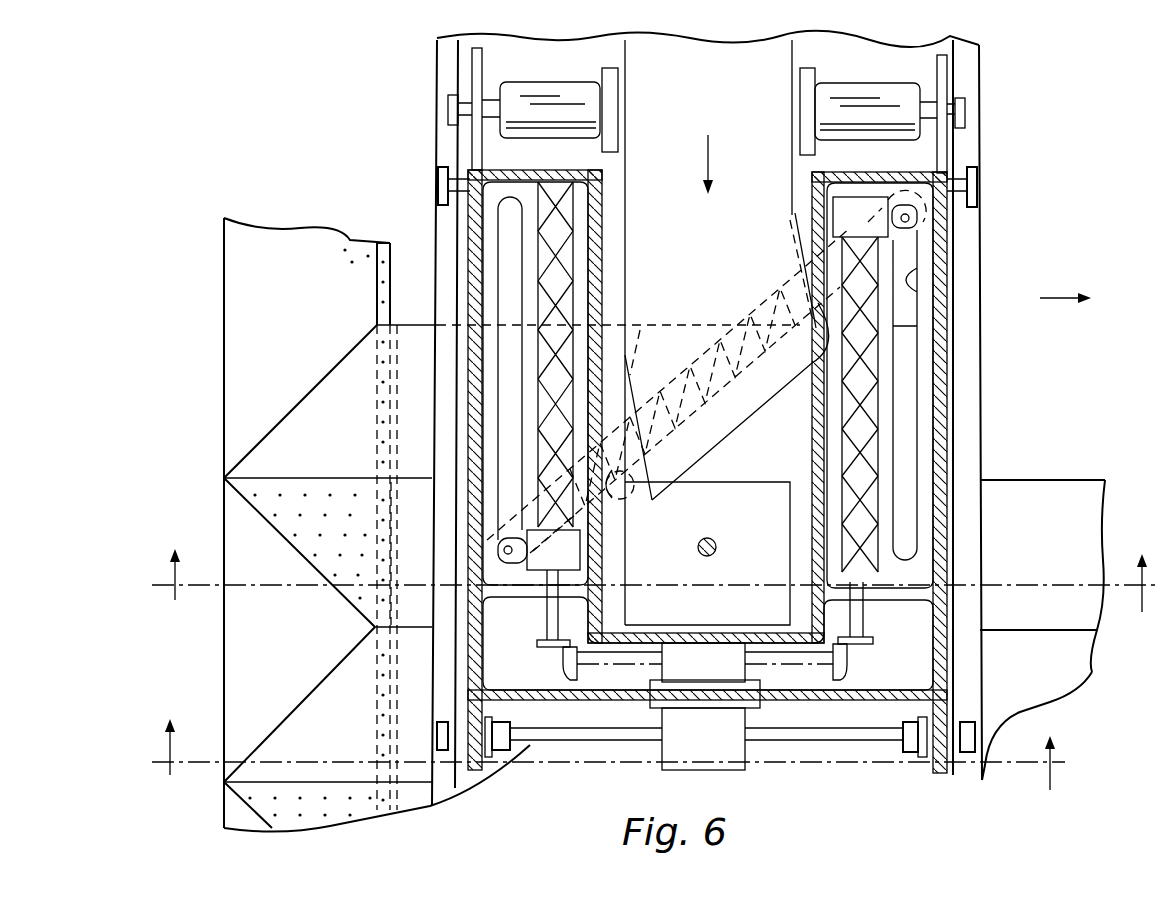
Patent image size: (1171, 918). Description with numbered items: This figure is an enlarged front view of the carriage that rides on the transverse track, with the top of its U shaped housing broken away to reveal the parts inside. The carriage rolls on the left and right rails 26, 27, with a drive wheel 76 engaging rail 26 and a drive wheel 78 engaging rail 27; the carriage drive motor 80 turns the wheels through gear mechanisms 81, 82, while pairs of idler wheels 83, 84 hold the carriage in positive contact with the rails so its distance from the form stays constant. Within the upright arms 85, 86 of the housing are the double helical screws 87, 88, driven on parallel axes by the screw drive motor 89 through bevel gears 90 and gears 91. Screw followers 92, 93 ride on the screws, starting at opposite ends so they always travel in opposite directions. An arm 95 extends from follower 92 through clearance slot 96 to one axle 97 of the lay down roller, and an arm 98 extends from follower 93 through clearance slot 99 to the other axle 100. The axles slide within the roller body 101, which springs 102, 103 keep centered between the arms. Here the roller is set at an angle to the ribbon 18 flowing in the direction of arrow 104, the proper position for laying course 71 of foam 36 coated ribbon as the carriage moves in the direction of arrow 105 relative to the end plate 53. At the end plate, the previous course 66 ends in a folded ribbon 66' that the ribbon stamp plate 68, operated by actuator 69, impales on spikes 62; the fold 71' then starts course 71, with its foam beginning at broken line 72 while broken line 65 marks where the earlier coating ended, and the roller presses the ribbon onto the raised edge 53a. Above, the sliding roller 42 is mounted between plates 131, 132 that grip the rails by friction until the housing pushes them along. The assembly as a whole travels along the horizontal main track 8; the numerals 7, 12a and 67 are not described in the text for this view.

The section line 7- 7 is at (656, 581).
The main track 8 is at (608, 755).
The reference plane 12a is at (384, 315).
The ribbon 18 is at (634, 496).
The left rail 26 is at (437, 112).
The right rail 27 is at (982, 354).
The foam 36 is at (692, 83).
The sliding roller 42 is at (548, 82).
The end plate 53 is at (222, 401).
The raised edge 53a is at (379, 260).
The spikes 62 is at (322, 257).
The broken line 65 is at (404, 530).
The course 66 is at (1042, 548).
The folded ribbon 66' is at (328, 653).
The wall 67 is at (1078, 672).
The ribbon stamp plate 68 is at (755, 496).
The actuator 69 is at (717, 548).
The course 71 is at (618, 291).
The fold 71' is at (300, 401).
The broken line 72 is at (398, 381).
The drive wheel 76 is at (442, 752).
The drive wheel 78 is at (965, 754).
The carriage drive motor 80 is at (690, 744).
The gear mechanism 81 is at (503, 752).
The gear mechanism 82 is at (910, 756).
The idler wheels 83 is at (430, 187).
The idler wheels 84 is at (978, 187).
The upright arm 85 is at (603, 220).
The upright arm 86 is at (812, 197).
The double helical screw 87 is at (575, 258).
The double helical screw 88 is at (837, 395).
The screw drive motor 89 is at (690, 672).
The bevel gears 90 is at (547, 664).
The gears 91 is at (871, 661).
The screw follower 92 is at (582, 555).
The screw follower 93 is at (827, 221).
The arm 95 is at (509, 560).
The clearance slot 96 is at (505, 258).
The axle 97 is at (553, 550).
The arm 98 is at (913, 218).
The clearance slot 99 is at (917, 282).
The axle 100 is at (860, 217).
The roller body 101 is at (661, 388).
The spring 102 is at (700, 440).
The spring 103 is at (752, 328).
The arrow 104 is at (711, 162).
The arrow 105 is at (1082, 298).
The plate 131 is at (483, 82).
The plate 132 is at (937, 74).